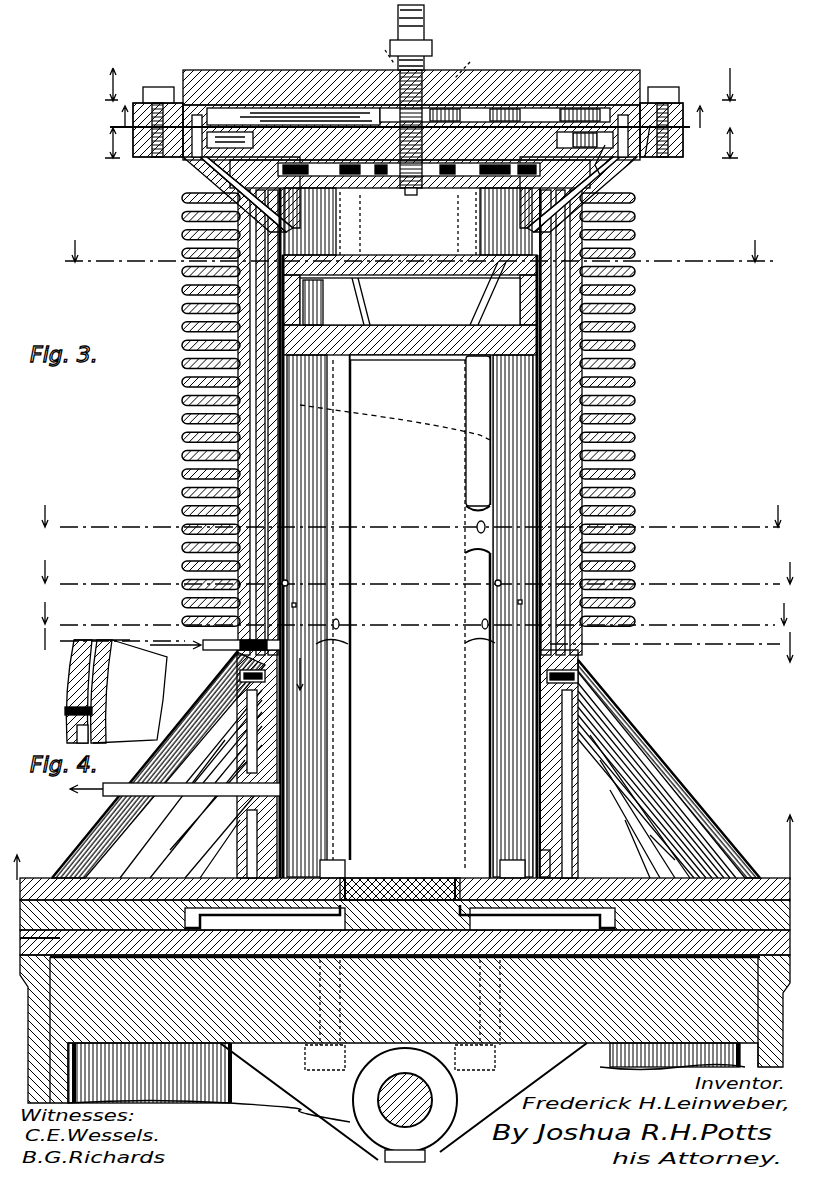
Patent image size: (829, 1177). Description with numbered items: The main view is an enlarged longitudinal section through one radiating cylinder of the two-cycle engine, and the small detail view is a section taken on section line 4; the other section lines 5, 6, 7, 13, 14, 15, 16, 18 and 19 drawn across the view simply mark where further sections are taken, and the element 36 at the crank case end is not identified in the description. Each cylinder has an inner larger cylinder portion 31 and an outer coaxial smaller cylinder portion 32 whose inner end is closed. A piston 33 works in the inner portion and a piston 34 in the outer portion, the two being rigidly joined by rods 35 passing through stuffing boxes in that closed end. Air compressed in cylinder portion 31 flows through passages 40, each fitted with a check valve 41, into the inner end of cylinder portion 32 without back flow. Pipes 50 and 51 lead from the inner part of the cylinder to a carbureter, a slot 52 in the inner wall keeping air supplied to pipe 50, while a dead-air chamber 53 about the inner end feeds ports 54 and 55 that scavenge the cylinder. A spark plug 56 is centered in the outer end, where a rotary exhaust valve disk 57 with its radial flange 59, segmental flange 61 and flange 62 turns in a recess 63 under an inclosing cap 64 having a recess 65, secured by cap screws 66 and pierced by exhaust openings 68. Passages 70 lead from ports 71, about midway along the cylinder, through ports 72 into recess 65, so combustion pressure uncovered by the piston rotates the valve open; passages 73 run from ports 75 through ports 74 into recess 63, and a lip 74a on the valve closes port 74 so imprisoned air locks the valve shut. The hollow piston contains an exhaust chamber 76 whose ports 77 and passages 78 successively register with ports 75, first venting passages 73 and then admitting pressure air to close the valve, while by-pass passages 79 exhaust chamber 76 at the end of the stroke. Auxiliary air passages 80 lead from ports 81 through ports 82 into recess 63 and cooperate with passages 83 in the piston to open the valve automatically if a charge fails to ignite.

In FIG. 3, the section line 4 is at (262, 683).
In FIG. 3, the section line 5 is at (415, 87).
In FIG. 3, the section line 6 is at (406, 117).
In FIG. 3, the section line 7 is at (419, 143).
In FIG. 3, the section line 13 is at (413, 255).
In FIG. 3, the section line 14 is at (411, 521).
In FIG. 3, the section line 15 is at (408, 573).
In FIG. 3, the section line 16 is at (405, 614).
In FIG. 3, the section line 18 is at (408, 645).
In FIG. 3, the section line 19 is at (403, 842).
In FIG. 3, the inner larger cylinder portion 31 is at (411, 1026).
In FIG. 3, the outer coaxial smaller cylinder portion 32 is at (580, 645).
In FIG. 4, the outer coaxial smaller cylinder portion 32 is at (66, 718).
In FIG. 3, the piston 33 is at (413, 1101).
In FIG. 3, the piston 34 is at (445, 358).
In FIG. 3, the rods 35 is at (468, 453).
In FIG. 3, the crank shaft bearing 36 is at (385, 1158).
In FIG. 3, the passages 40 is at (355, 885).
In FIG. 3, the check valve 41 is at (405, 915).
In FIG. 3, the pipe 50 is at (190, 783).
In FIG. 3, the pipe 51 is at (212, 650).
In FIG. 3, the slot 52 is at (275, 820).
In FIG. 3, the dead-air chamber 53 is at (428, 780).
In FIG. 3, the ports 54 is at (575, 672).
In FIG. 4, the ports 54 is at (78, 700).
In FIG. 3, the ports 55 is at (518, 602).
In FIG. 3, the spark plug 56 is at (426, 52).
In FIG. 3, the rotary exhaust valve 57 is at (395, 115).
In FIG. 3, the radial flange 59 is at (372, 108).
In FIG. 3, the segmental flange 61 is at (372, 190).
In FIG. 3, the flange 62 is at (185, 160).
In FIG. 3, the recess 63 is at (605, 160).
In FIG. 3, the inclosing cap 64 is at (640, 80).
In FIG. 3, the recess 65 is at (590, 120).
In FIG. 3, the cap screws 66 is at (158, 87).
In FIG. 3, the ports or openings 68 is at (423, 52).
In FIG. 3, the passages 70 is at (215, 170).
In FIG. 3, the ports 71 is at (265, 537).
In FIG. 3, the ports 72 is at (228, 132).
In FIG. 3, the passages 73 is at (300, 242).
In FIG. 3, the ports 74 is at (650, 150).
In FIG. 3, the lip or shoulder 74a is at (598, 130).
In FIG. 3, the ports 75 is at (500, 637).
In FIG. 3, the internal exhaust chamber 76 is at (410, 301).
In FIG. 3, the ports 77 is at (470, 372).
In FIG. 3, the passages 78 is at (368, 300).
In FIG. 3, the by-pass passages 79 is at (360, 862).
In FIG. 3, the auxiliary air passages 80 is at (395, 422).
In FIG. 3, the ports 81 is at (495, 582).
In FIG. 3, the ports 82 is at (270, 108).
In FIG. 3, the passages 83 is at (310, 300).